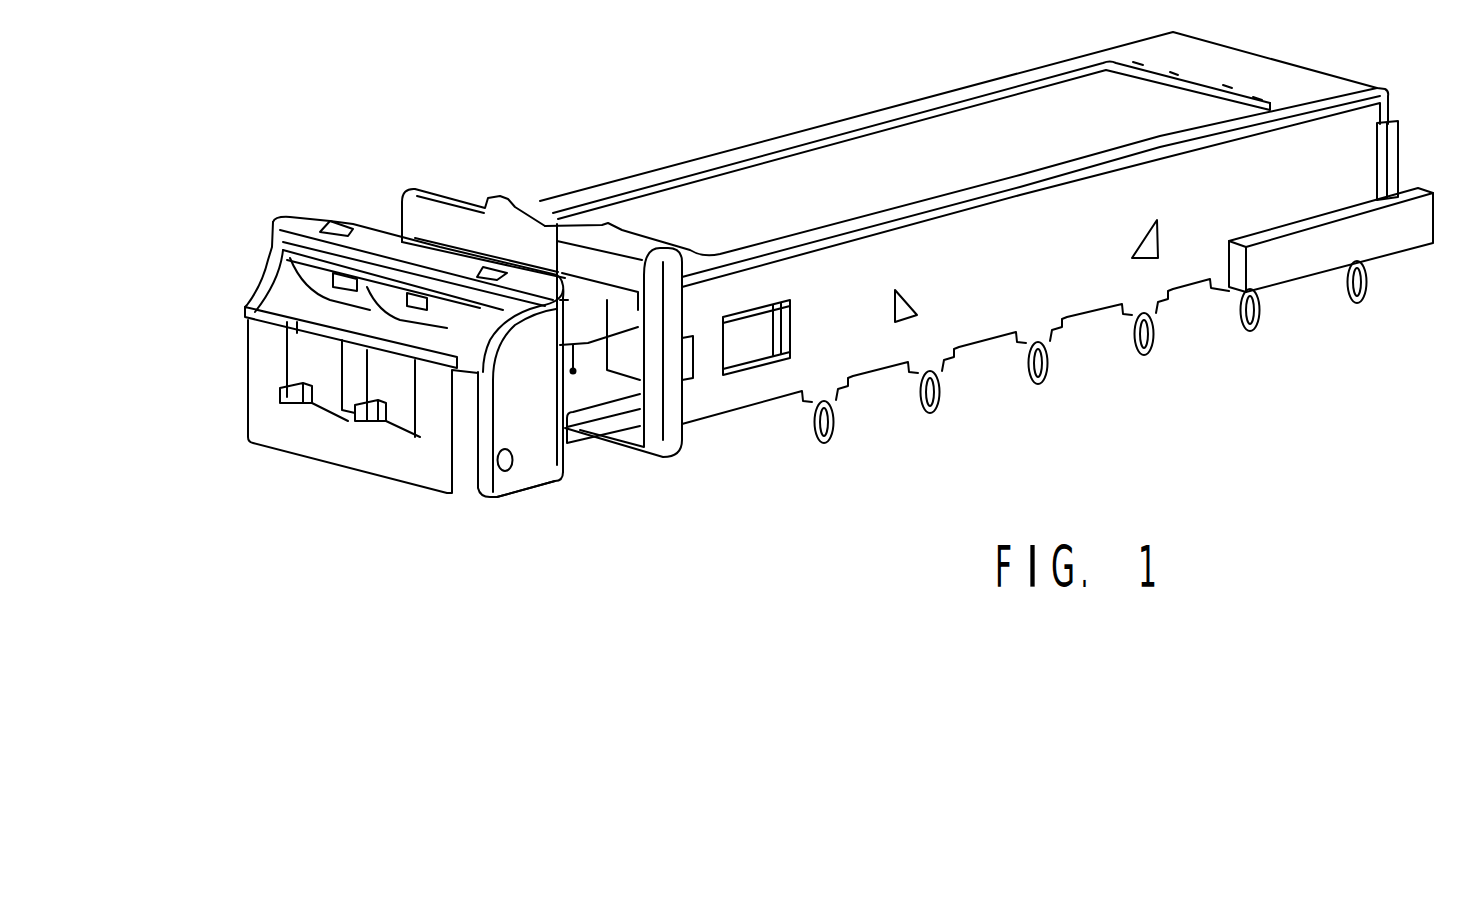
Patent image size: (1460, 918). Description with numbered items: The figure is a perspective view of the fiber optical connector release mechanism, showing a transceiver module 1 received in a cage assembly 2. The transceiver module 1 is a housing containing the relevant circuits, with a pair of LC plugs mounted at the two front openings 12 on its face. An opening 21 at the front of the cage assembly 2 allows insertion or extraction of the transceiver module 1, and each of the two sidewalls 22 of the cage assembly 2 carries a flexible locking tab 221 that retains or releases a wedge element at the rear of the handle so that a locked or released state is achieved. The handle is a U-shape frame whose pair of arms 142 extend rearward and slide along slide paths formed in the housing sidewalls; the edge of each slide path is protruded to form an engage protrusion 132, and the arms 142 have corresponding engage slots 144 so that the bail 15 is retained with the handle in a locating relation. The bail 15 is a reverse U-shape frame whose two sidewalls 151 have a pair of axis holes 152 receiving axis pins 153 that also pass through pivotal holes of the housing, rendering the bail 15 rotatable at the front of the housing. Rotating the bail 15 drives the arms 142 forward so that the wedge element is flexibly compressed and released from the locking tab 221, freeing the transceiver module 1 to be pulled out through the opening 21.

The transceiver module 1 is at (607, 370).
The cage assembly 2 is at (933, 135).
The front openings 12 is at (300, 361).
The bail 15 is at (361, 224).
The opening 21 is at (610, 374).
The sidewalls 22 is at (993, 288).
The engage protrusion 132 is at (575, 373).
The arm 142 is at (627, 373).
The engage slot 144 is at (592, 338).
The sidewalls 151 is at (535, 440).
The axis hole 152 is at (478, 448).
The axis pins 153 is at (505, 471).
The locking tab 221 is at (753, 340).